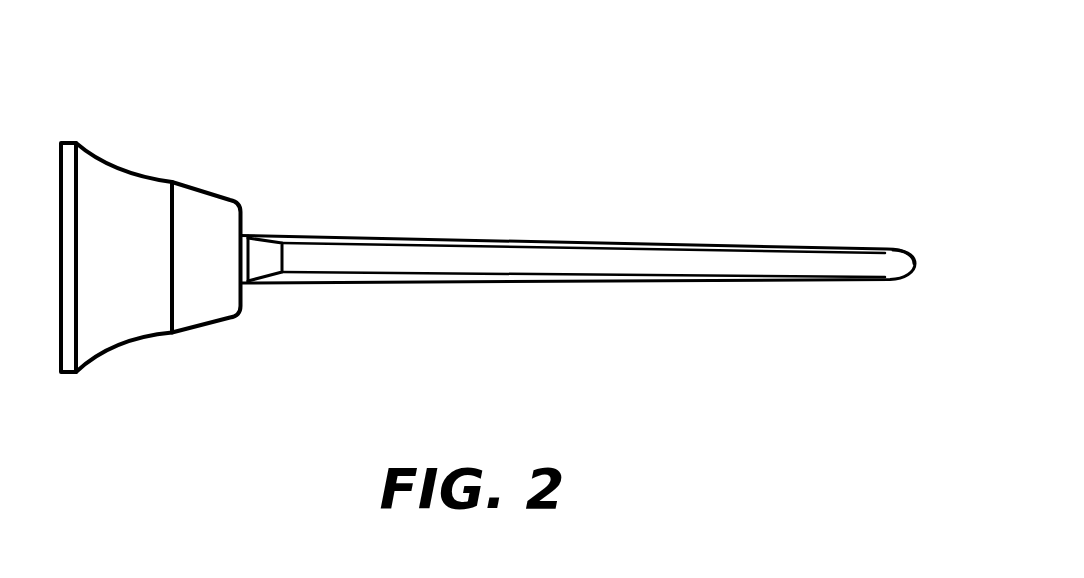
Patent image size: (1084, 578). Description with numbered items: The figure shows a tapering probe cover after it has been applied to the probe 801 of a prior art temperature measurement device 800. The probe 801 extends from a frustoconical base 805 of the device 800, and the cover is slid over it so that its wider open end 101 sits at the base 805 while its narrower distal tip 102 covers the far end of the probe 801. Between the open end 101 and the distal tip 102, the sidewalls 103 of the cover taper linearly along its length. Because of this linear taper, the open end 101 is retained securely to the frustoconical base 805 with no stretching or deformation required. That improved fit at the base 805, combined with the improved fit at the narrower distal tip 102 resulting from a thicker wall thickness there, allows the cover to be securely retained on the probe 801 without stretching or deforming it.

The temperature measurement device 800 is at (139, 149).
The probe 801 is at (510, 262).
The frustoconical base 805 is at (257, 250).
The open end 101 is at (244, 290).
The distal tip 102 is at (915, 253).
The sidewalls 103 is at (335, 284).